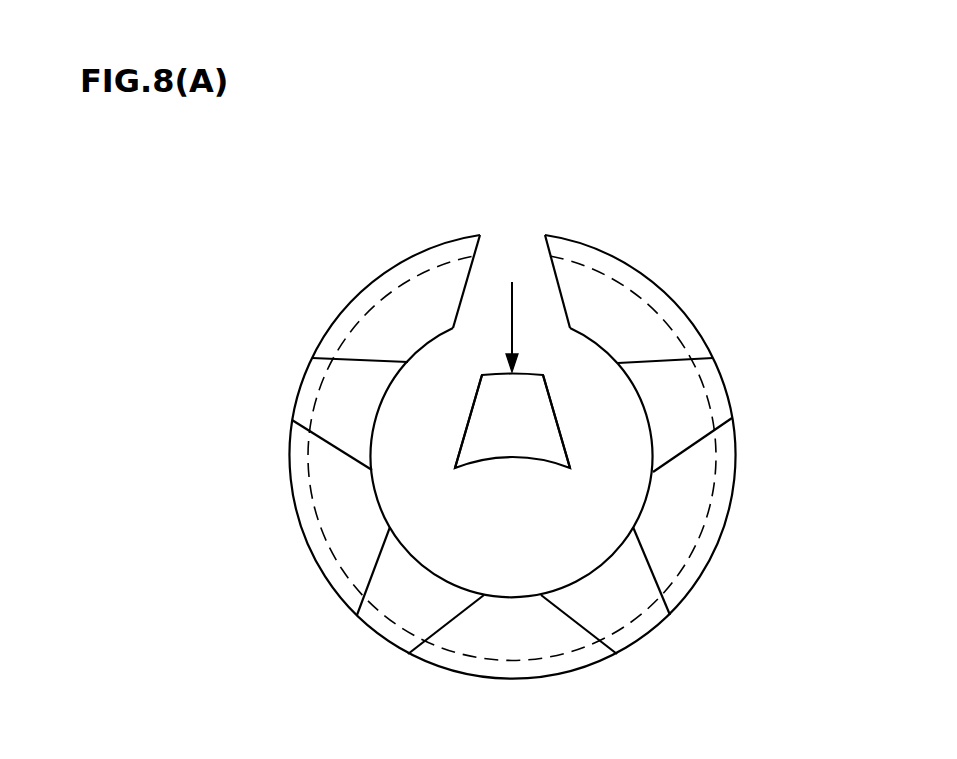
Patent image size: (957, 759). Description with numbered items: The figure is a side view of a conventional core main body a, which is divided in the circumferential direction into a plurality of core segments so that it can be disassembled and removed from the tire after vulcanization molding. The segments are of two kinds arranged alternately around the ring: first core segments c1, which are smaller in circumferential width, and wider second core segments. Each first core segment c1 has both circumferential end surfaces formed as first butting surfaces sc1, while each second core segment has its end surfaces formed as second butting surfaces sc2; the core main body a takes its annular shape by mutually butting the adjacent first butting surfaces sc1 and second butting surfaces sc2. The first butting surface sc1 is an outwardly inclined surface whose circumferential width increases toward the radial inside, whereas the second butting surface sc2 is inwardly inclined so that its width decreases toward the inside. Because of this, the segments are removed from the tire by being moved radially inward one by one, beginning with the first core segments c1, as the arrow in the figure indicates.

The core main body a is at (704, 290).
The second butting surface sc2 is at (470, 281).
The first butting surface sc1 is at (462, 433).
The first core segment c1 is at (512, 437).